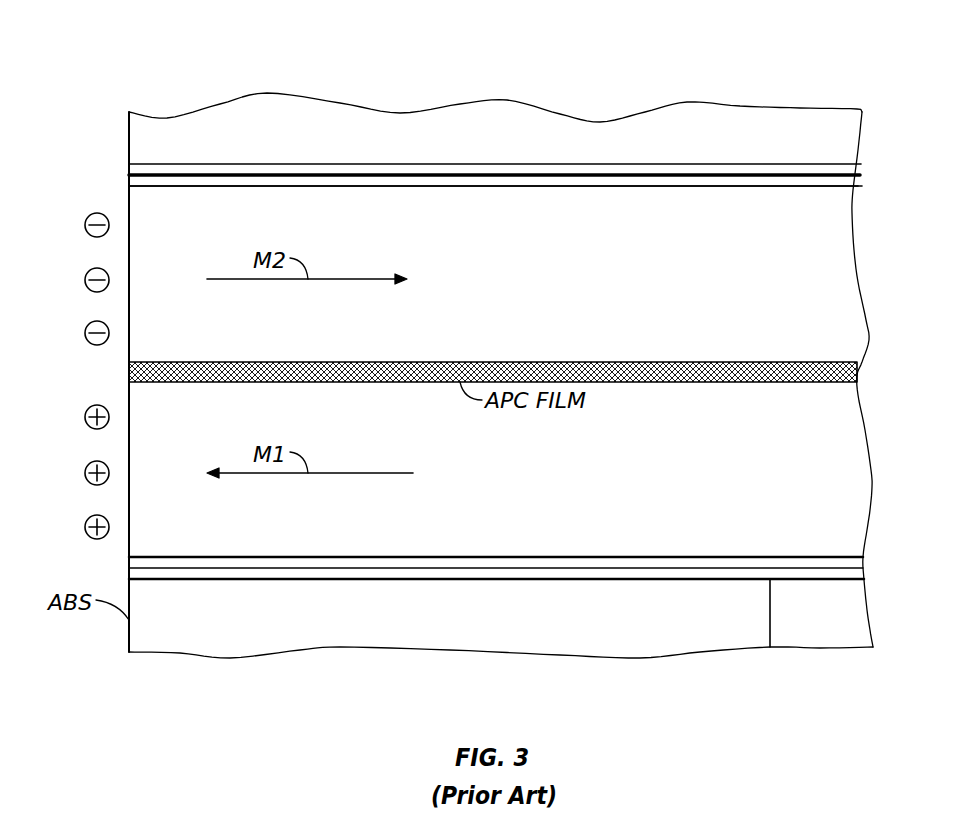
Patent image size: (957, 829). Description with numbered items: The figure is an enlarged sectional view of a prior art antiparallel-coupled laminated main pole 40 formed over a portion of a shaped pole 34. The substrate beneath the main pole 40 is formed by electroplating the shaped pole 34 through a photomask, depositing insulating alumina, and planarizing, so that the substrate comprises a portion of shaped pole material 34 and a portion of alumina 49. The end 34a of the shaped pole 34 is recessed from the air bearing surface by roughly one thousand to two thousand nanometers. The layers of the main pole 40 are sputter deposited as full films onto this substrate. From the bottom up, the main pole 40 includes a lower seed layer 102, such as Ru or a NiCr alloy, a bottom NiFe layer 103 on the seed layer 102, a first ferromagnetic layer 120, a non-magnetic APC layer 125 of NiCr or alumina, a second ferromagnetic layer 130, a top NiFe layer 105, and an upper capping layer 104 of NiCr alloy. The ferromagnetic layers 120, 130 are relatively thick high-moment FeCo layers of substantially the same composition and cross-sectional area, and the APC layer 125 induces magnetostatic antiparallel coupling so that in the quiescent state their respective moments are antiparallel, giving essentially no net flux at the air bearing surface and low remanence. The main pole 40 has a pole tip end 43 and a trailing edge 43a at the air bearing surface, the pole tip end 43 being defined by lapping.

The antiparallel-coupled laminated main pole 40 is at (806, 62).
The pole tip end 43 is at (129, 205).
The trailing edge 43a is at (150, 186).
The upper capping layer 104 is at (856, 170).
The top NiFe layer 105 is at (856, 181).
The ferromagnetic layer 130 is at (856, 283).
The APC layer 125 is at (855, 372).
The ferromagnetic layer 120 is at (866, 478).
The bottom NiFe layer 103 is at (858, 563).
The lower seed layer 102 is at (859, 573).
The shaped pole 34 is at (856, 612).
The end of shaped pole 34a is at (770, 626).
The alumina portion 49 is at (183, 642).